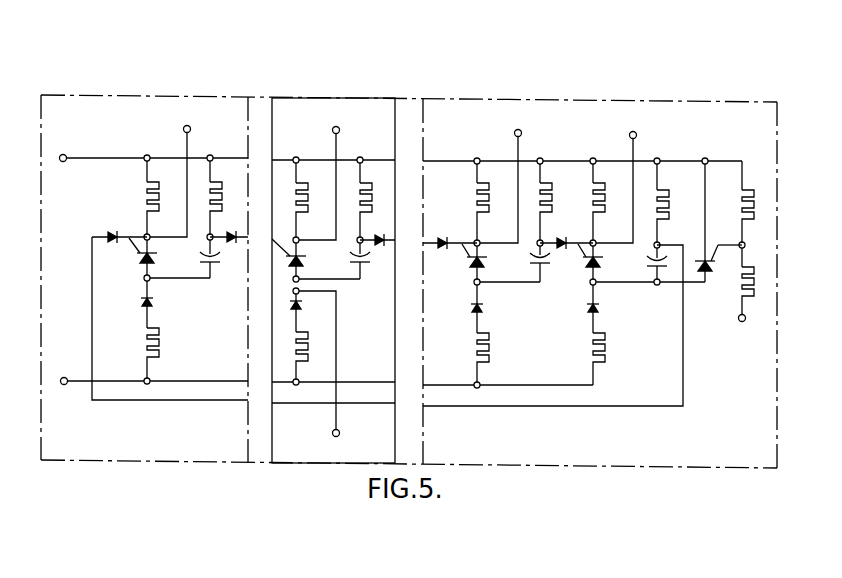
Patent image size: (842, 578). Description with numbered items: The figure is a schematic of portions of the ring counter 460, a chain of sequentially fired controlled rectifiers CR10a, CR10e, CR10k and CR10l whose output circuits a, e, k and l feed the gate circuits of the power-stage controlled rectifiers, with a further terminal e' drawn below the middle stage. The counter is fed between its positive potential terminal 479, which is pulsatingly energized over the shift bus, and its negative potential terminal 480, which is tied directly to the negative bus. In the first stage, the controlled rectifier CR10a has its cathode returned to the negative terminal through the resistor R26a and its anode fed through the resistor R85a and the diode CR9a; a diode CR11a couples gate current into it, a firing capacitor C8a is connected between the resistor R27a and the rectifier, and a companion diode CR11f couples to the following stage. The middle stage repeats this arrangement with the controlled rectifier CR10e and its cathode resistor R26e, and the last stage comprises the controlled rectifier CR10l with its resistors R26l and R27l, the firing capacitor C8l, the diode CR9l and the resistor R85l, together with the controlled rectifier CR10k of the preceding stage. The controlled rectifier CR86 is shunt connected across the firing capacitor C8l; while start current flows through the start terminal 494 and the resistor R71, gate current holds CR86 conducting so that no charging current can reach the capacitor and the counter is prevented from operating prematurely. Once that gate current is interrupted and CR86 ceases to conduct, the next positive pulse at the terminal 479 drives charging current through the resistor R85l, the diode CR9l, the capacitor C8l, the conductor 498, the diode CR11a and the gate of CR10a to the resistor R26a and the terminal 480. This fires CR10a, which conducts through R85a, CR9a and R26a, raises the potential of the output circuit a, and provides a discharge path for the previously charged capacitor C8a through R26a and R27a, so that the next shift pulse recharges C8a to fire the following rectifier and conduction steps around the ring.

The ring counter 460 is at (383, 97).
The negative potential terminal 480 is at (61, 175).
The positive potential terminal 479 is at (64, 377).
The start terminal 494 is at (742, 322).
The conductor 498 is at (683, 376).
The resistor R26a is at (145, 196).
The resistor R27a is at (224, 186).
The diode CR11a is at (112, 226).
The controlled rectifier CR10a is at (143, 263).
The capacitor C8a is at (198, 264).
The diode CR11f is at (229, 247).
The diode CR9a is at (139, 303).
The resistor R85a is at (162, 342).
The resistor R26e is at (312, 180).
The controlled rectifier CR10e is at (299, 259).
The resistor R26l is at (589, 191).
The resistor R27l is at (673, 196).
The controlled rectifier CR10k is at (469, 262).
The controlled rectifier CR10l is at (585, 263).
The firing capacitor C8l is at (645, 265).
The controlled rectifier CR86 is at (709, 239).
The resistor R71 is at (760, 270).
The diode CR9l is at (598, 310).
The resistor R85l is at (607, 350).
The output circuit a is at (169, 172).
The output circuit e is at (318, 175).
The terminal e prime e' is at (320, 375).
The output circuit k is at (499, 178).
The output circuit l is at (615, 179).